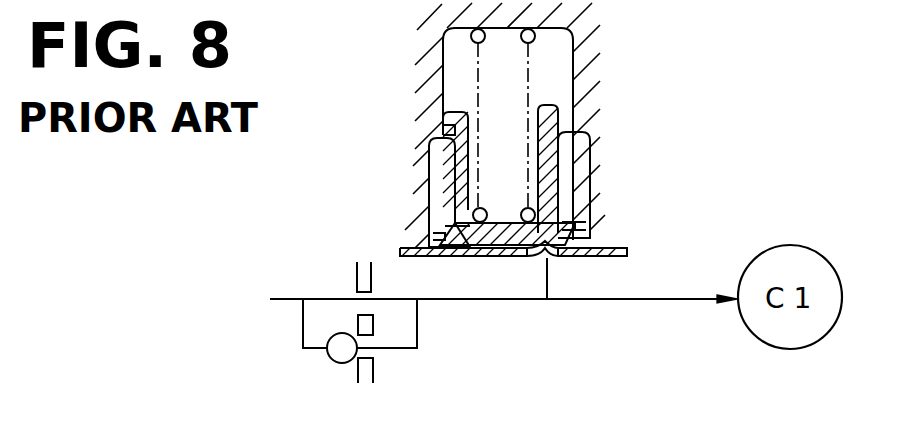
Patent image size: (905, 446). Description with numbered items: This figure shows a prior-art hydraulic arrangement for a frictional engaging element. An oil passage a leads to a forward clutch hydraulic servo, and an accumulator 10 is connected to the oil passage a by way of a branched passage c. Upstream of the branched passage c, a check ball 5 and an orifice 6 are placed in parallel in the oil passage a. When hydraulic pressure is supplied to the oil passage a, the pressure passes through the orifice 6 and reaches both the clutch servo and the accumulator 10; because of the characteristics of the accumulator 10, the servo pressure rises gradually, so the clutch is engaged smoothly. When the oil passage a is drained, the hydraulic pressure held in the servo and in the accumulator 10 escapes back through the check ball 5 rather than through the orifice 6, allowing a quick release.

The accumulator 10 is at (612, 106).
The orifice 6 is at (356, 283).
The check ball 5 is at (340, 362).
The oil passage a is at (492, 302).
The branched passage c is at (550, 277).